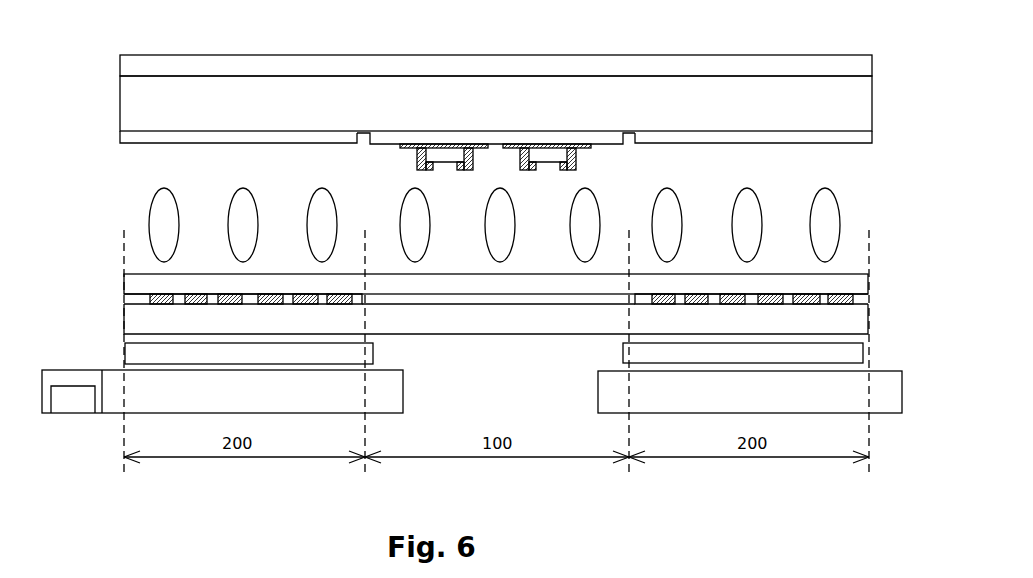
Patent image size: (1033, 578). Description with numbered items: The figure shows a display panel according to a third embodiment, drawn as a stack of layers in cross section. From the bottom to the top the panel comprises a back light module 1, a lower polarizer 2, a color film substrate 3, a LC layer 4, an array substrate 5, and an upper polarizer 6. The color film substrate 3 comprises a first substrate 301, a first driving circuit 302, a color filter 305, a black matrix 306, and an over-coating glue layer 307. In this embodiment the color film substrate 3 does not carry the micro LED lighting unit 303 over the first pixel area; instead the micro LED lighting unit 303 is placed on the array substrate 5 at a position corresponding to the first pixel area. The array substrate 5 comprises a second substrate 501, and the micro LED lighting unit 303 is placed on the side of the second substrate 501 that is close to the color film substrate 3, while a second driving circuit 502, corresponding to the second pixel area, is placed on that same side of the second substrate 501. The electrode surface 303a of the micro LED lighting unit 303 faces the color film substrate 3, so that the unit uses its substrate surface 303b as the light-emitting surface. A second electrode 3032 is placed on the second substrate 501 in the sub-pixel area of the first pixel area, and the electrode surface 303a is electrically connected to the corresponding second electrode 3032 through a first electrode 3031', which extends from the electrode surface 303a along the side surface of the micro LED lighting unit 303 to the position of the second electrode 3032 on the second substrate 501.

The back light module 1 is at (885, 400).
The lower polarizer 2 is at (858, 357).
The color film substrate 3 is at (488, 313).
The LC layer 4 is at (100, 228).
The array substrate 5 is at (488, 132).
The upper polarizer 6 is at (868, 65).
The first substrate 301 is at (135, 322).
The first driving circuit 302 is at (612, 140).
The micro LED lighting unit 303 is at (563, 122).
The electrode surface 303a is at (450, 180).
The substrate surface 303b is at (444, 132).
The first electrode 3031' is at (539, 182).
The second electrode 3032 is at (587, 143).
The color filter 305 is at (534, 295).
The black matrix 306 is at (815, 300).
The over-coating (OC) glue layer 307 is at (135, 284).
The second substrate 501 is at (858, 102).
The second driving circuit 502 is at (862, 137).